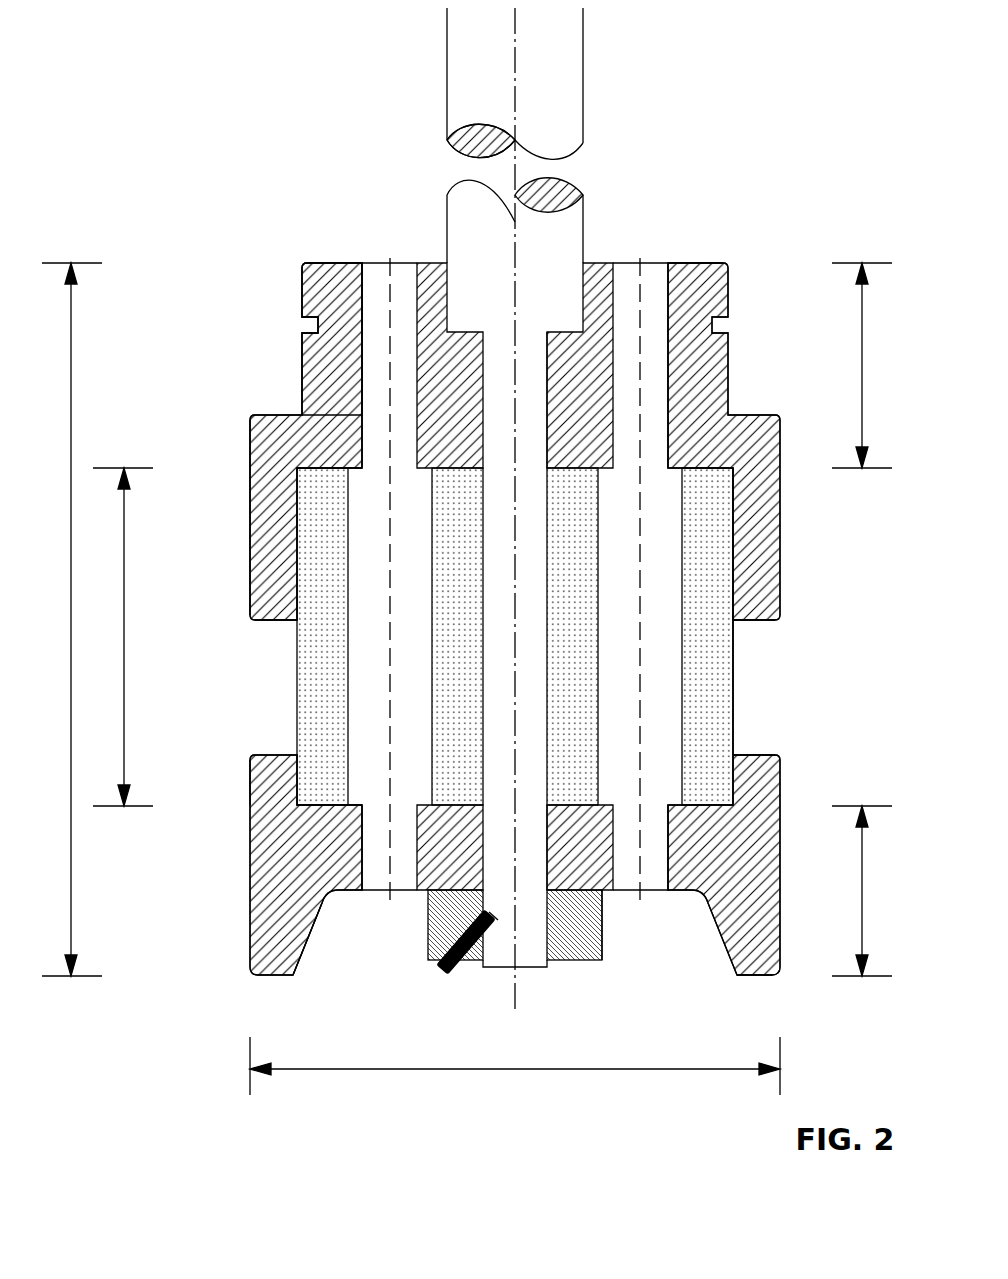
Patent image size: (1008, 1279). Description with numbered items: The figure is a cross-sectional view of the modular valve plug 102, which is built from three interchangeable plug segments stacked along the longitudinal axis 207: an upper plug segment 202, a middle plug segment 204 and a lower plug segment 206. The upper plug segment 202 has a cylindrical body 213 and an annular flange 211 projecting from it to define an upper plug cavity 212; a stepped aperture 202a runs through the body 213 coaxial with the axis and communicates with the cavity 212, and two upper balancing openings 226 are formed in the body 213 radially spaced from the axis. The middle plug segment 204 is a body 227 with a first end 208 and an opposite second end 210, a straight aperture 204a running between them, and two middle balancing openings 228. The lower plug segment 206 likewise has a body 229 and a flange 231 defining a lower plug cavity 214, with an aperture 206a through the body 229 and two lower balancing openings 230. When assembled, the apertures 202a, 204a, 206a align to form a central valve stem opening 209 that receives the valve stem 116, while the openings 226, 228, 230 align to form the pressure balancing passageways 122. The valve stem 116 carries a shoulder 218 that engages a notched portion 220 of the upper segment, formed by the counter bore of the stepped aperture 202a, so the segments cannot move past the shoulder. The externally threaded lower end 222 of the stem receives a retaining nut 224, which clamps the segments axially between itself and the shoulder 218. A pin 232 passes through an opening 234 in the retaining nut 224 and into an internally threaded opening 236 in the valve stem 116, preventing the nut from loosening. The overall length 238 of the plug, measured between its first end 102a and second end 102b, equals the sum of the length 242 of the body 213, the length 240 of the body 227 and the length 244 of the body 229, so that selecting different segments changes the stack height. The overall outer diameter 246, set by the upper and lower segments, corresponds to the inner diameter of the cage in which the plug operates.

The valve plug 102 is at (238, 84).
The first end of the valve plug 102a is at (685, 262).
The second end of the valve plug 102b is at (748, 976).
The valve stem 116 is at (583, 92).
The pressure balancing passageways 122 is at (369, 256).
The upper plug segment 202 is at (250, 438).
The aperture of the upper plug segment 202a is at (547, 378).
The middle plug segment 204 is at (737, 655).
The aperture of the middle plug segment 204a is at (547, 585).
The lower plug segment 206 is at (250, 848).
The aperture of the lower plug segment 206a is at (552, 842).
The longitudinal axis 207 is at (513, 218).
The first end of the middle body 208 is at (318, 467).
The valve stem opening 209 is at (540, 860).
The second end of the middle body 210 is at (327, 807).
The flange of the upper plug segment 211 is at (250, 532).
The upper plug cavity 212 is at (297, 583).
The body of the upper plug segment 213 is at (302, 286).
The lower plug cavity 214 is at (742, 758).
The shoulder 218 is at (560, 332).
The notched portion 220 is at (414, 262).
The lower end of the valve stem 222 is at (537, 968).
The retaining nut 224 is at (607, 937).
The upper balancing openings 226 is at (362, 377).
The body of the middle plug segment 227 is at (738, 710).
The middle balancing openings 228 is at (683, 490).
The body of the lower plug segment 229 is at (319, 928).
The lower balancing openings 230 is at (673, 863).
The flange of the lower plug segment 231 is at (250, 773).
The pin 232 is at (440, 976).
The opening in the retaining nut 234 is at (442, 945).
The opening in the valve stem 236 is at (490, 925).
The overall length 238 is at (71, 640).
The length of the middle body 240 is at (125, 672).
The length of the upper body 242 is at (866, 370).
The length of the lower body 244 is at (866, 888).
The overall outer diameter 246 is at (471, 1072).